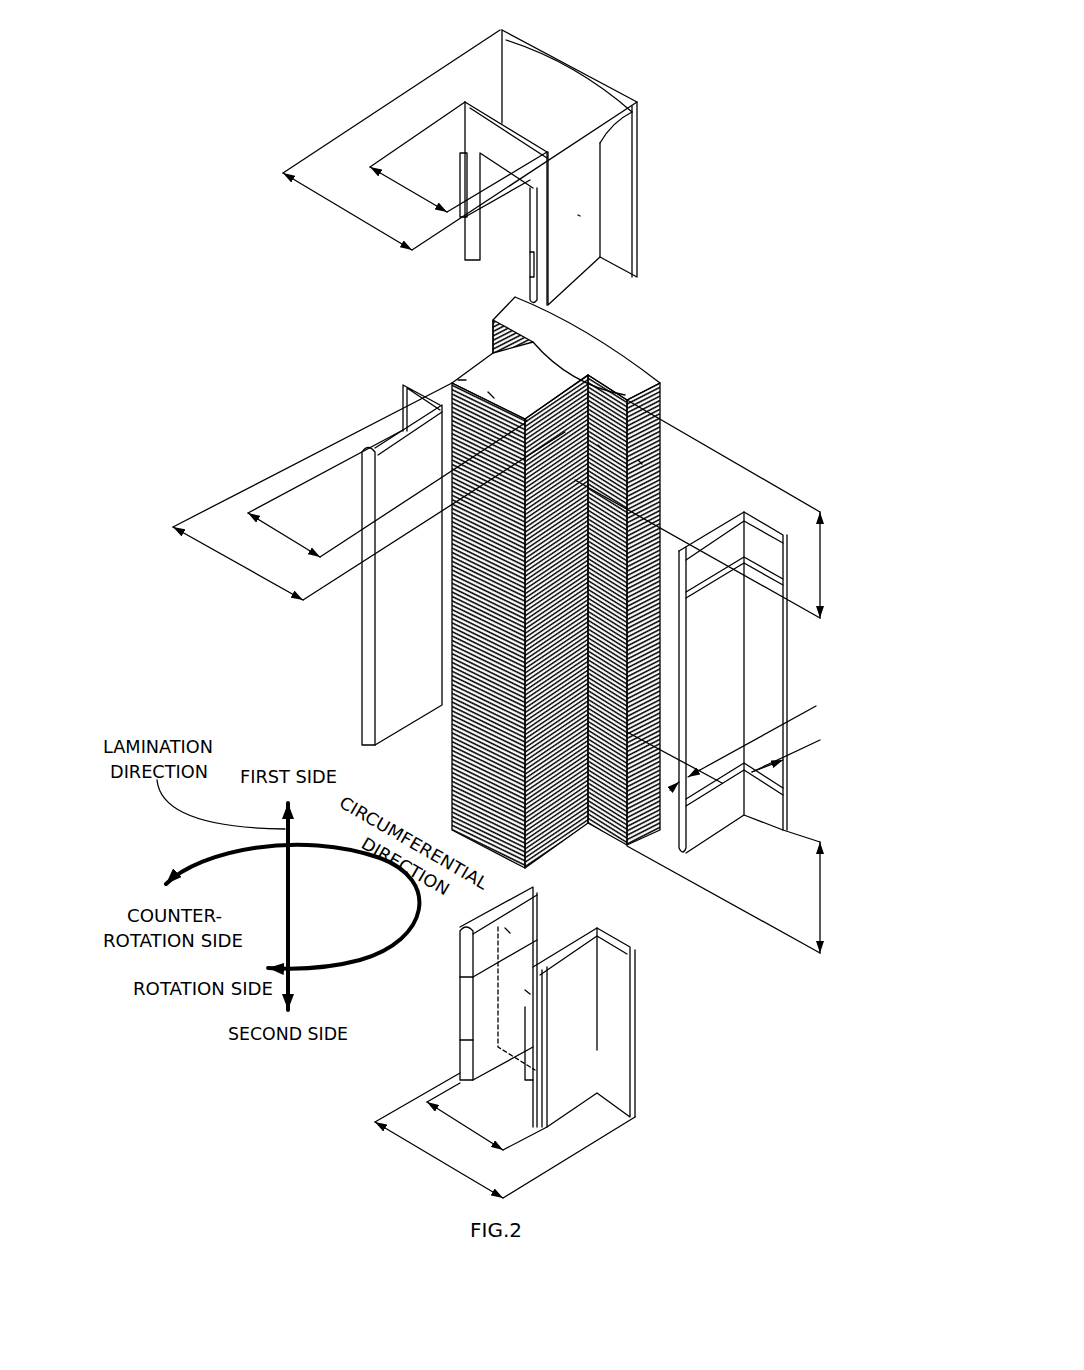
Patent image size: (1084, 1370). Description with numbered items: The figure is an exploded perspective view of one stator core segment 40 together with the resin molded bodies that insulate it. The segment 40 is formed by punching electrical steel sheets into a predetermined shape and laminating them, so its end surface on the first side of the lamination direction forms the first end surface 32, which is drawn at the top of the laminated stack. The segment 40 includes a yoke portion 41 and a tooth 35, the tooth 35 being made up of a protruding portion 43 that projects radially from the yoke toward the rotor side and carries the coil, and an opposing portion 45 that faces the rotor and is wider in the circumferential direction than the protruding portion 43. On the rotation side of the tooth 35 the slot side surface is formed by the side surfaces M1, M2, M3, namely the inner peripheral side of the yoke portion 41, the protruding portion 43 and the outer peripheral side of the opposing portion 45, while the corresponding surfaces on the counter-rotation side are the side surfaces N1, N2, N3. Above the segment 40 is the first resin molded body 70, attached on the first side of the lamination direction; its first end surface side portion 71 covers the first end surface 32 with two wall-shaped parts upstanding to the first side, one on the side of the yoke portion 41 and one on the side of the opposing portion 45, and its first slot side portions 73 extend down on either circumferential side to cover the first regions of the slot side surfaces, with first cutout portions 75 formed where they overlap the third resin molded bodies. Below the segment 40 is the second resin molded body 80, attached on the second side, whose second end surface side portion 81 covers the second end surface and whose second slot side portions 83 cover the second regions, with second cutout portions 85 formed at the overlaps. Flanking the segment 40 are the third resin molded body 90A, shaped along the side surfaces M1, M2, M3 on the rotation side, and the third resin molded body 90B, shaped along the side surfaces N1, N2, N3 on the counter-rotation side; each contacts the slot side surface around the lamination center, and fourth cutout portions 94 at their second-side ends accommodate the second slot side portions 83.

The first resin molded body 70 is at (490, 167).
The first end surface side portion 71 is at (543, 123).
The first slot side portion 73 is at (467, 183).
The first cutout portion 75 is at (497, 232).
The segment 40 is at (561, 572).
The yoke portion 41 is at (563, 317).
The opposing portion 45 is at (540, 383).
The protruding portion 43 is at (565, 366).
The tooth 35 is at (635, 348).
The first end surface 32 is at (627, 388).
The side surface N1 is at (497, 340).
The side surface N2 is at (491, 398).
The side surface N3 is at (466, 381).
The side surface M1 is at (600, 447).
The side surface M2 is at (640, 463).
The side surface M3 is at (527, 419).
The third resin molded body 90B is at (369, 561).
The third resin molded body 90A is at (736, 676).
The fourth cutout portion 94 is at (740, 780).
The second resin molded body 80 is at (535, 1042).
The second end surface side portion 81 is at (513, 1040).
The second slot side portion 83 is at (467, 1010).
The second cutout portion 85 is at (507, 930).